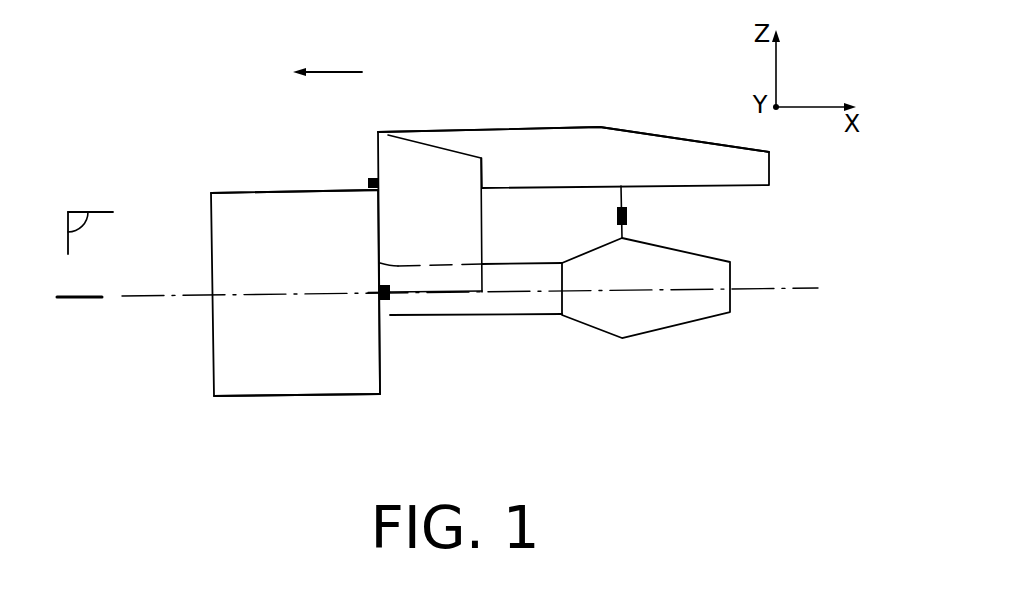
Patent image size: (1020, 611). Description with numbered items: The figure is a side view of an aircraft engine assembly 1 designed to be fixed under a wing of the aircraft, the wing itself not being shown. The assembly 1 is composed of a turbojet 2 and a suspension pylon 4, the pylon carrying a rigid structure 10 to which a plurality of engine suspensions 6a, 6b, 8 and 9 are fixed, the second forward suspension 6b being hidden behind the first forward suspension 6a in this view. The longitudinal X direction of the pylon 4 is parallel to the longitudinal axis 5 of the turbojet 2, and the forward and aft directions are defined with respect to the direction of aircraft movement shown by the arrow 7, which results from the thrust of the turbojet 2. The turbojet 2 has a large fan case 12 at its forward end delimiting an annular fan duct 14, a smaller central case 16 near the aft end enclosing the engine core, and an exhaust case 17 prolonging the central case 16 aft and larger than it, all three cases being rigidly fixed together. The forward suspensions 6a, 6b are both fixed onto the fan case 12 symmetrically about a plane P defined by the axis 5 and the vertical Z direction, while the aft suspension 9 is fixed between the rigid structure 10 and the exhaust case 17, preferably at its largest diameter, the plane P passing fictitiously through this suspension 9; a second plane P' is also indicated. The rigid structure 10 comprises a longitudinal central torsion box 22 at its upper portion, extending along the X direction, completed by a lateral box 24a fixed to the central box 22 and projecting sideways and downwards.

The aircraft engine assembly 1 is at (146, 184).
The turbojet 2 is at (316, 408).
The suspension pylon 4 is at (594, 114).
The longitudinal axis 5 is at (157, 299).
The first engine forward suspension 6a is at (384, 301).
The second engine forward suspension 6b is at (385, 292).
The arrow 7 is at (330, 71).
The engine suspension 8 is at (369, 180).
The engine aft suspension 9 is at (629, 213).
The rigid structure 10 is at (516, 124).
The fan case 12 is at (243, 203).
The annular fan duct 14 is at (340, 373).
The central case 16 is at (535, 321).
The exhaust case 17 is at (667, 328).
The longitudinal central box 22 is at (430, 135).
The lateral box 24a is at (473, 177).
The plane P is at (90, 209).
The plane P' is at (79, 332).